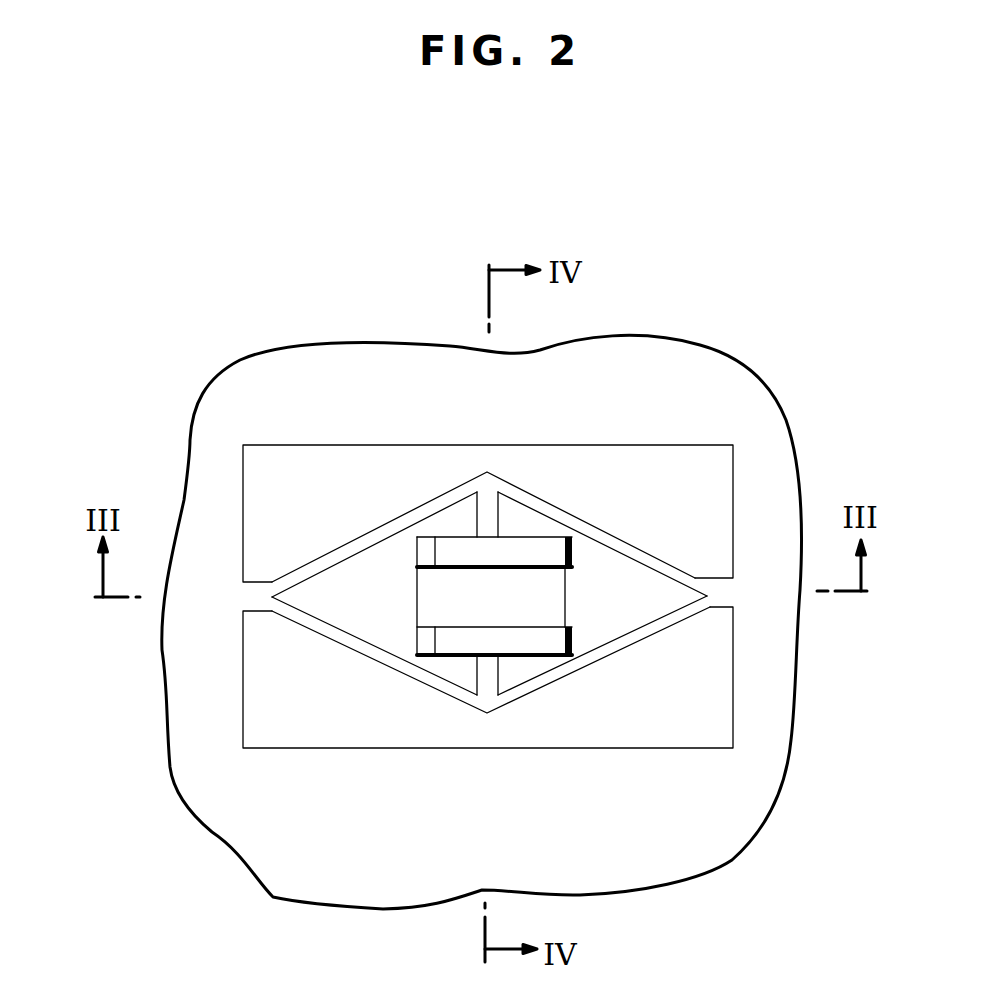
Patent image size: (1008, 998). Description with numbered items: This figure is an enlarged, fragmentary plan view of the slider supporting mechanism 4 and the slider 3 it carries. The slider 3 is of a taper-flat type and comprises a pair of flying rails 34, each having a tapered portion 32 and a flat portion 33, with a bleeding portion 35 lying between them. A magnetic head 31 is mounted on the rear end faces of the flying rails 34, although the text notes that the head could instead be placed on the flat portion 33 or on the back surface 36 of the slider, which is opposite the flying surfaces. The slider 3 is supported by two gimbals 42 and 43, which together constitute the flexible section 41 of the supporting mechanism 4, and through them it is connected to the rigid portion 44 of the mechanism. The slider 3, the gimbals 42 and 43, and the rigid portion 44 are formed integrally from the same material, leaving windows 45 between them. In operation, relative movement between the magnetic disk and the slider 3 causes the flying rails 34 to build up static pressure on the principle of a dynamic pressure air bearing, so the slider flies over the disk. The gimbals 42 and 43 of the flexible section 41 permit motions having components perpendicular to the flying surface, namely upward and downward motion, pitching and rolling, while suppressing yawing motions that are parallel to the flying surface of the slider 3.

The slider 3 is at (405, 579).
The slider supporting mechanism 4 is at (757, 508).
The magnetic head 31 is at (572, 635).
The tapered portion 32 is at (427, 545).
The flat portion 33 is at (523, 553).
The flying rails 34 is at (447, 664).
The bleeding portion 35 is at (542, 590).
The back surface 36 is at (565, 660).
The flexible section 41 is at (474, 466).
The gimbal 42 is at (428, 540).
The gimbal 43 is at (648, 555).
The rigid portion 44 is at (768, 660).
The windows 45 is at (720, 698).